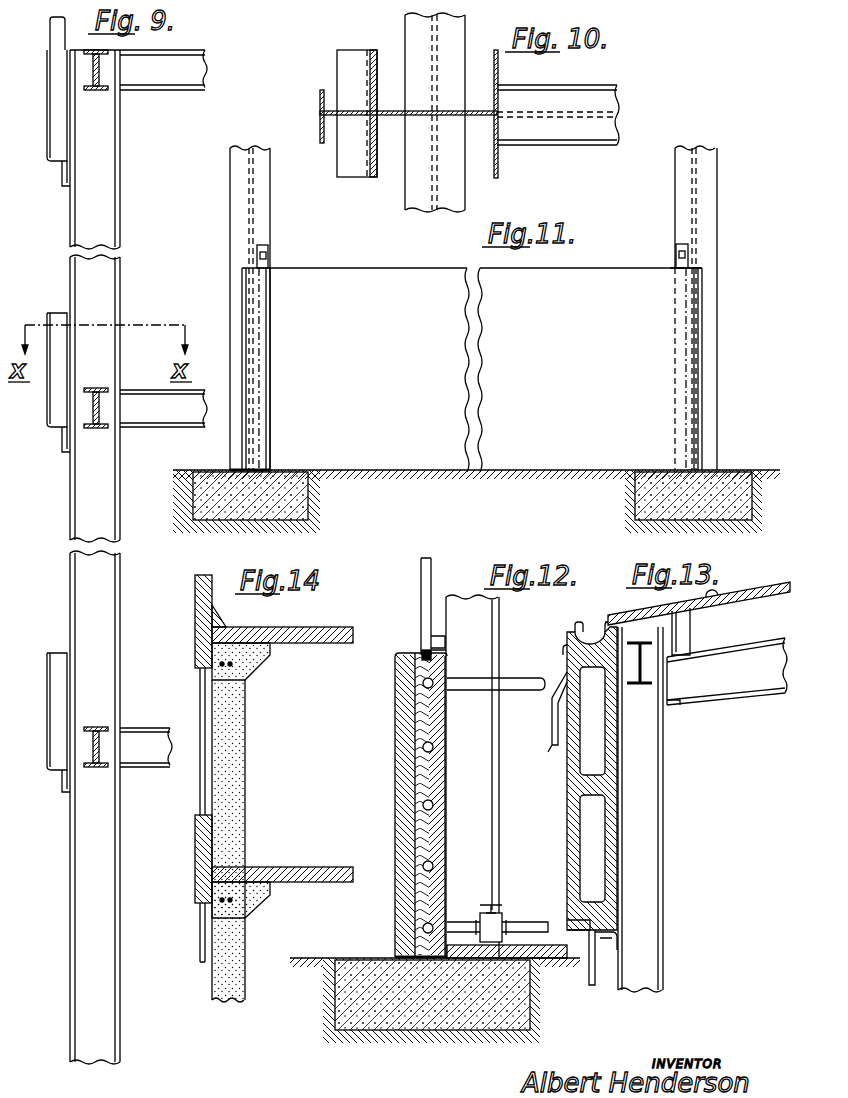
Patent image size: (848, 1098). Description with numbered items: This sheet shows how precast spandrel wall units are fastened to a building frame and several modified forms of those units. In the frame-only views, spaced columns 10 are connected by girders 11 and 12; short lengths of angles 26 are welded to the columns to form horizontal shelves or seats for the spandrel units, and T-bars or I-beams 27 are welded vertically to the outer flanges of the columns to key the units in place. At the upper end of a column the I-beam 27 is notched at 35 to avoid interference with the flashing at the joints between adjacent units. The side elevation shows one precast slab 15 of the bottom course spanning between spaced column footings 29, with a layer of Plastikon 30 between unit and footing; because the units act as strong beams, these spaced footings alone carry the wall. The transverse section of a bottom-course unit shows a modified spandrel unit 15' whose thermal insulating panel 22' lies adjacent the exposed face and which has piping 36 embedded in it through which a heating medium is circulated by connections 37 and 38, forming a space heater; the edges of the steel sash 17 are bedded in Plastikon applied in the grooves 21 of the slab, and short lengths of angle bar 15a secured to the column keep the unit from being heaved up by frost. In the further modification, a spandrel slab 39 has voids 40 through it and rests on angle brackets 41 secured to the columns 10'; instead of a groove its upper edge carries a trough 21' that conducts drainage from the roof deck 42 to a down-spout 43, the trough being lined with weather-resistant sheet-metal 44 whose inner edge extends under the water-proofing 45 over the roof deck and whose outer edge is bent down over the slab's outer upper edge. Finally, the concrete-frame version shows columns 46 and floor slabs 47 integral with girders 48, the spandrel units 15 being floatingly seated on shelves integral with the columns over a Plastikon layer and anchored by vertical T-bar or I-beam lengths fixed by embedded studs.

In FIG. 9, the column 10 is at (72, 557).
In FIG. 10, the column 10 is at (409, 114).
In FIG. 11, the column 10 is at (472, 308).
In FIG. 12, the column 10 is at (472, 776).
In FIG. 13, the column 10' is at (662, 809).
In FIG. 9, the girder 11 is at (98, 90).
In FIG. 10, the girder 11 is at (408, 30).
In FIG. 9, the girder 12 is at (180, 78).
In FIG. 10, the girder 12 is at (583, 92).
In FIG. 13, the girder 12 is at (727, 671).
In FIG. 11, the precast slab 15 is at (472, 370).
In FIG. 14, the precast slab 15 is at (187, 739).
In FIG. 12, the spandrel unit 15' is at (383, 805).
In FIG. 11, the angle bar 15a is at (270, 262).
In FIG. 12, the angle bar 15a is at (420, 645).
In FIG. 14, the steel sash 17 is at (200, 803).
In FIG. 12, the steel sash 17 is at (422, 589).
In FIG. 13, the steel sash 17 is at (590, 985).
In FIG. 12, the groove 21 is at (403, 663).
In FIG. 13, the groove 21 is at (567, 912).
In FIG. 13, the trough 21' is at (549, 639).
In FIG. 12, the thermal insulating panel 22' is at (398, 806).
In FIG. 9, the angle 26 is at (62, 180).
In FIG. 10, the angle 26 is at (340, 62).
In FIG. 9, the I-beam 27 is at (52, 106).
In FIG. 10, the I-beam 27 is at (320, 110).
In FIG. 11, the I-beam 27 is at (244, 294).
In FIG. 11, the column footing 29 is at (305, 505).
In FIG. 12, the column footing 29 is at (385, 1025).
In FIG. 11, the layer of Plastikon 30 is at (284, 470).
In FIG. 12, the layer of Plastikon 30 is at (393, 957).
In FIG. 9, the notch 35 is at (62, 33).
In FIG. 12, the piping 36 is at (433, 805).
In FIG. 12, the connection 37 is at (508, 680).
In FIG. 12, the connection 38 is at (515, 922).
In FIG. 13, the spandrel slab 39 is at (608, 782).
In FIG. 13, the void 40 is at (600, 758).
In FIG. 13, the angle bracket 41 is at (612, 945).
In FIG. 13, the roof deck 42 is at (760, 587).
In FIG. 13, the down-spout 43 is at (553, 750).
In FIG. 13, the sheet-metal 44 is at (588, 640).
In FIG. 13, the water-proofing 45 is at (714, 600).
In FIG. 14, the column 46 is at (236, 770).
In FIG. 14, the floor slab 47 is at (306, 868).
In FIG. 14, the girder 48 is at (240, 895).